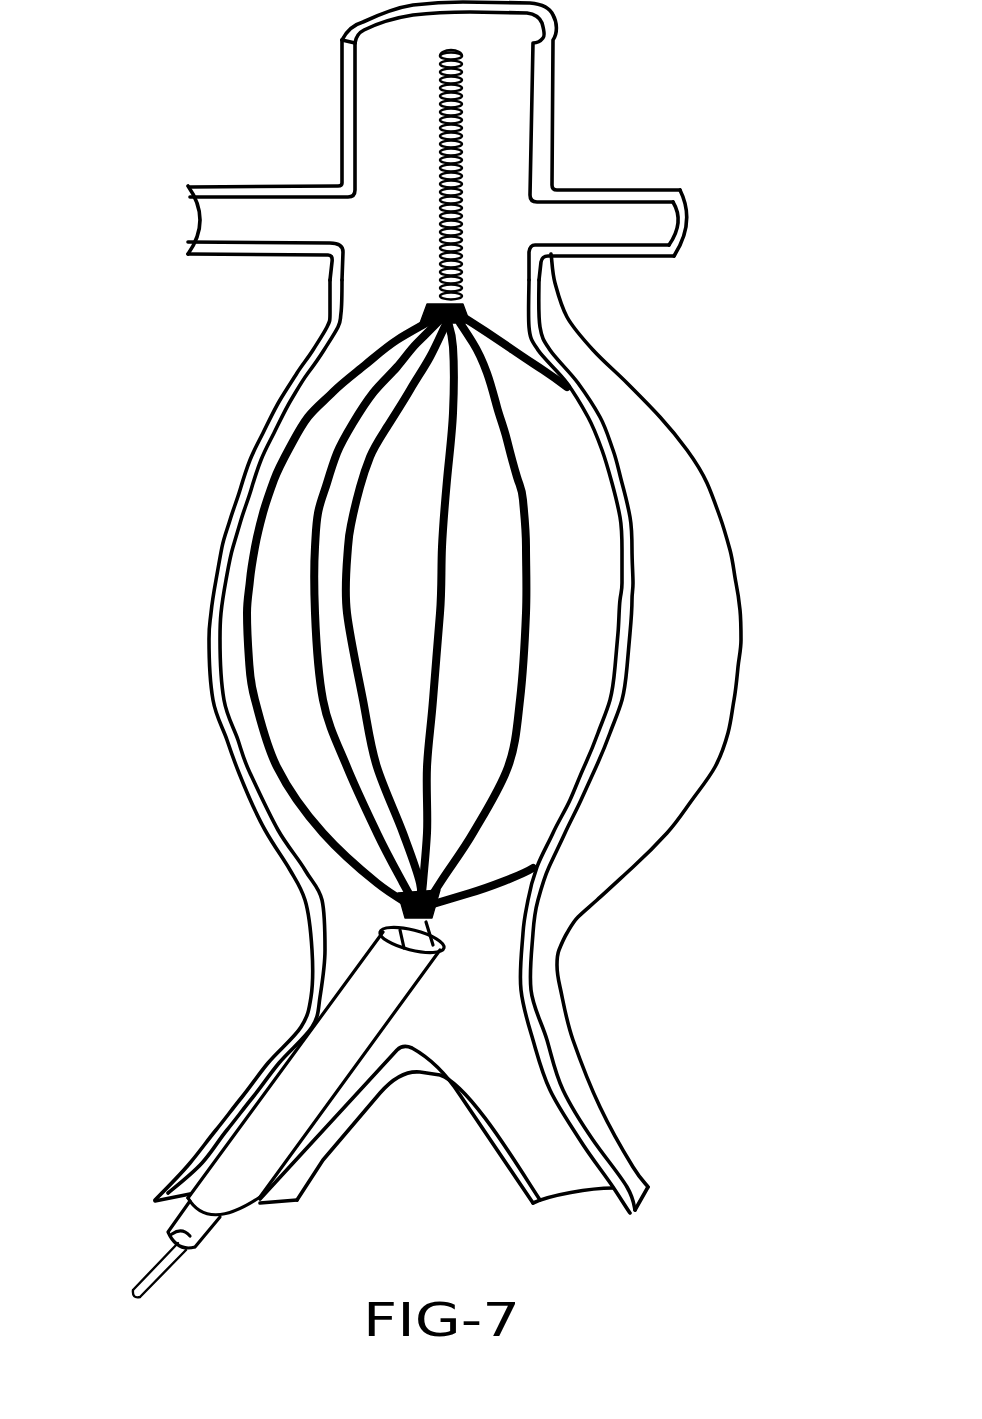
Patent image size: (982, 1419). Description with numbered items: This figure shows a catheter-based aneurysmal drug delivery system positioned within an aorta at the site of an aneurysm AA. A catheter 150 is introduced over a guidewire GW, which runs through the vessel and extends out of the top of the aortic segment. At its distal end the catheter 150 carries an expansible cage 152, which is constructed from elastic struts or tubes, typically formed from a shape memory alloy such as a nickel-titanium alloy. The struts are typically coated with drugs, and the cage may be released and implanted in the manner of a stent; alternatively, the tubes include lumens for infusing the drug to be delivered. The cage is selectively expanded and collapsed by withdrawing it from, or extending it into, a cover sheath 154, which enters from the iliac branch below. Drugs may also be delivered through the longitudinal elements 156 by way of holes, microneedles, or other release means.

The catheter 150 is at (267, 1228).
The expansible cage 152 is at (305, 611).
The cover sheath 154 is at (337, 1018).
The longitudinal elements 156 is at (358, 728).
The abdominal aortic aneurysm AA is at (657, 653).
The guidewire GW is at (465, 126).